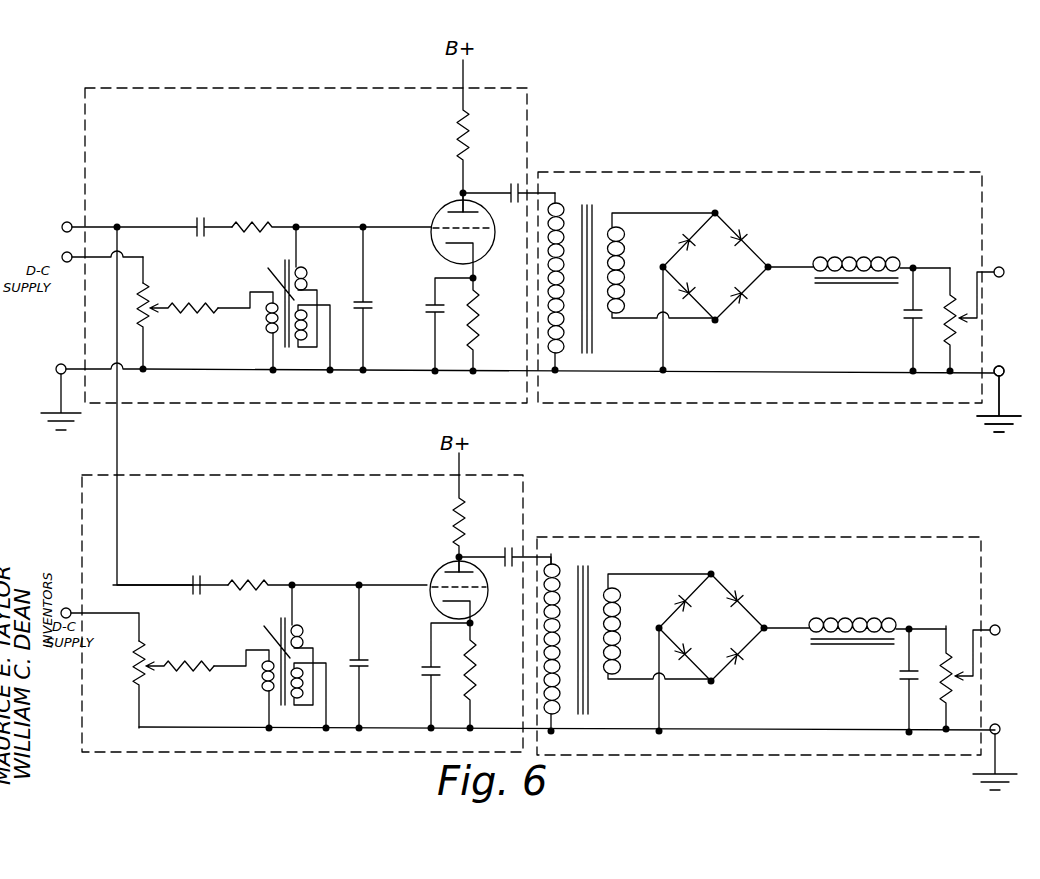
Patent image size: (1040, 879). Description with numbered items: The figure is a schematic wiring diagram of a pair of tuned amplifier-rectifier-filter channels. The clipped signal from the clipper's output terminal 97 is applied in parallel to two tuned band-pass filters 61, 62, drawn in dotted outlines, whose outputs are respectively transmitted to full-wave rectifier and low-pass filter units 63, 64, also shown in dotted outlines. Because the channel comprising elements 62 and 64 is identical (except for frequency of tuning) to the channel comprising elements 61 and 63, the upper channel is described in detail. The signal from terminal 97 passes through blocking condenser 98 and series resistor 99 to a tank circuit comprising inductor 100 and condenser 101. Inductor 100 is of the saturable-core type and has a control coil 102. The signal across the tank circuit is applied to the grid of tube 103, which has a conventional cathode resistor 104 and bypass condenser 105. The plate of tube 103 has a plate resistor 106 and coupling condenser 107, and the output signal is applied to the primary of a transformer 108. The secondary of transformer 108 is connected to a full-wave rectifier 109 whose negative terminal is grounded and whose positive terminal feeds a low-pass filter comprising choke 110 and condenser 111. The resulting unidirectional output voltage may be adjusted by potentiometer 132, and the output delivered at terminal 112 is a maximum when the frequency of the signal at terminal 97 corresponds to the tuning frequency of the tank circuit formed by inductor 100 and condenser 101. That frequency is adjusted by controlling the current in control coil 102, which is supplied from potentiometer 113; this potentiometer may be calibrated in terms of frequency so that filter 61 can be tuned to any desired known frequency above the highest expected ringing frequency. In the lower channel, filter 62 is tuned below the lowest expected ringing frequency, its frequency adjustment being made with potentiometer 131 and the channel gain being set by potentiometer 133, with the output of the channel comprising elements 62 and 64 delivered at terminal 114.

The output terminal 97 is at (64, 220).
The blocking condenser 98 is at (208, 200).
The series resistor 99 is at (268, 200).
The inductor 100 is at (300, 278).
The condenser 101 is at (392, 297).
The control coil 102 is at (272, 331).
The tube 103 is at (440, 216).
The cathode resistor 104 is at (478, 324).
The bypass condenser 105 is at (430, 316).
The plate resistor 106 is at (468, 132).
The coupling condenser 107 is at (511, 183).
The transformer 108 is at (586, 202).
The full-wave rectifier 109 is at (716, 292).
The choke 110 is at (866, 241).
The condenser 111 is at (904, 312).
The terminal 112 is at (1001, 266).
The potentiometer 113 is at (152, 318).
The potentiometer 132 is at (973, 319).
The tuned band-pass filter 61 is at (340, 404).
The tuned band-pass filter 62 is at (178, 474).
The full-wave rectifier and low-pass filter unit 63 is at (798, 403).
The full-wave rectifier and low-pass filter unit 64 is at (790, 537).
The potentiometer 131 is at (149, 678).
The potentiometer 133 is at (970, 679).
The terminal 114 is at (998, 624).